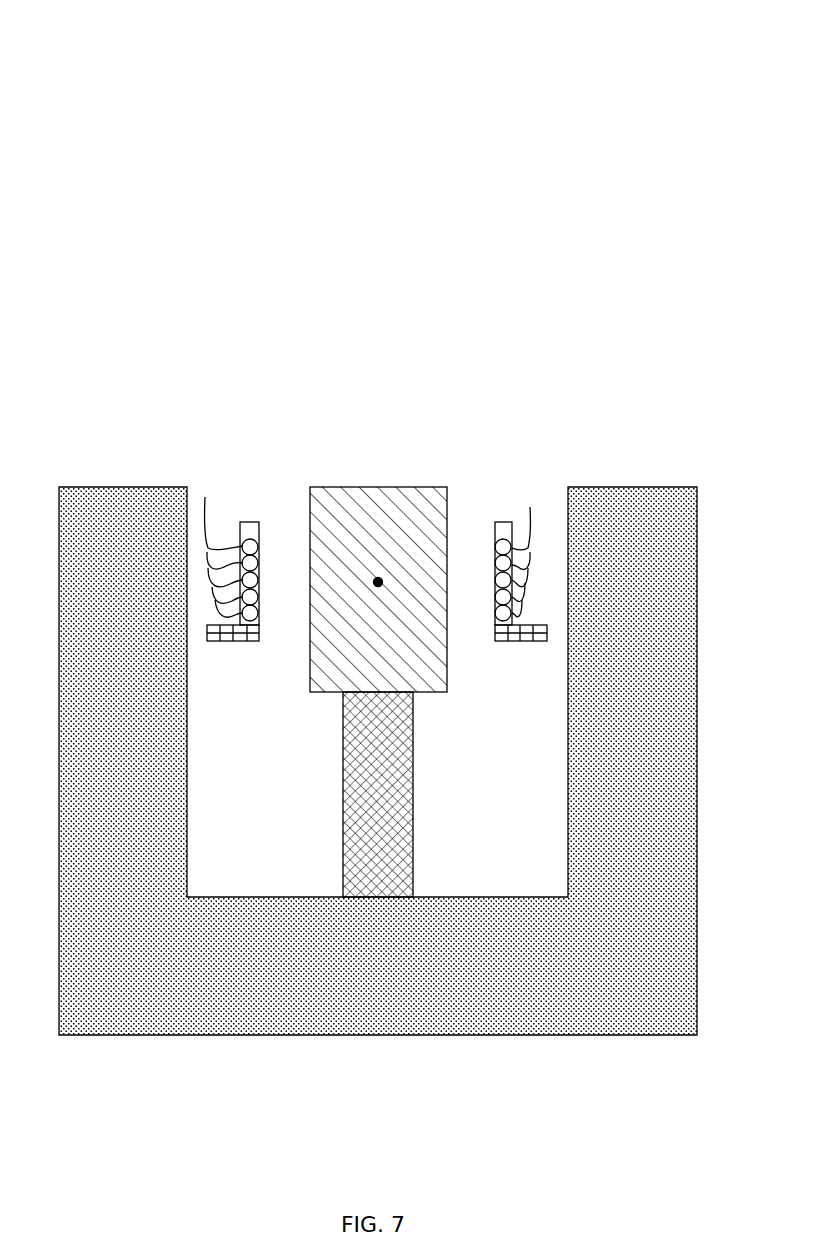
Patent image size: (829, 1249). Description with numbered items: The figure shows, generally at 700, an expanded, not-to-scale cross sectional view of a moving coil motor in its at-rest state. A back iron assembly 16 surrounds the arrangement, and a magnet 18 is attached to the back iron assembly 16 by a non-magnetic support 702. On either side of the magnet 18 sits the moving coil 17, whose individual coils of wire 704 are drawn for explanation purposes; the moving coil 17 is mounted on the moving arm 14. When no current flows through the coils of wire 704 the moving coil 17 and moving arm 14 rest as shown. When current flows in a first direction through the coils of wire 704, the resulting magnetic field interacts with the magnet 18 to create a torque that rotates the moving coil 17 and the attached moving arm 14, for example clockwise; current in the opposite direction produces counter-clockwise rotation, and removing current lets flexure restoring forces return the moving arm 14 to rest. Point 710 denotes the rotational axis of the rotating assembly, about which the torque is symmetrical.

The cross sectional view embodiment 700 is at (668, 31).
The back iron assembly 16 is at (637, 487).
The moving coil 17 is at (253, 522).
The magnet 18 is at (397, 487).
The coils of wire 704 is at (205, 510).
The moving arm 14 is at (230, 643).
The rotational axis 710 is at (368, 588).
The support 702 is at (413, 795).